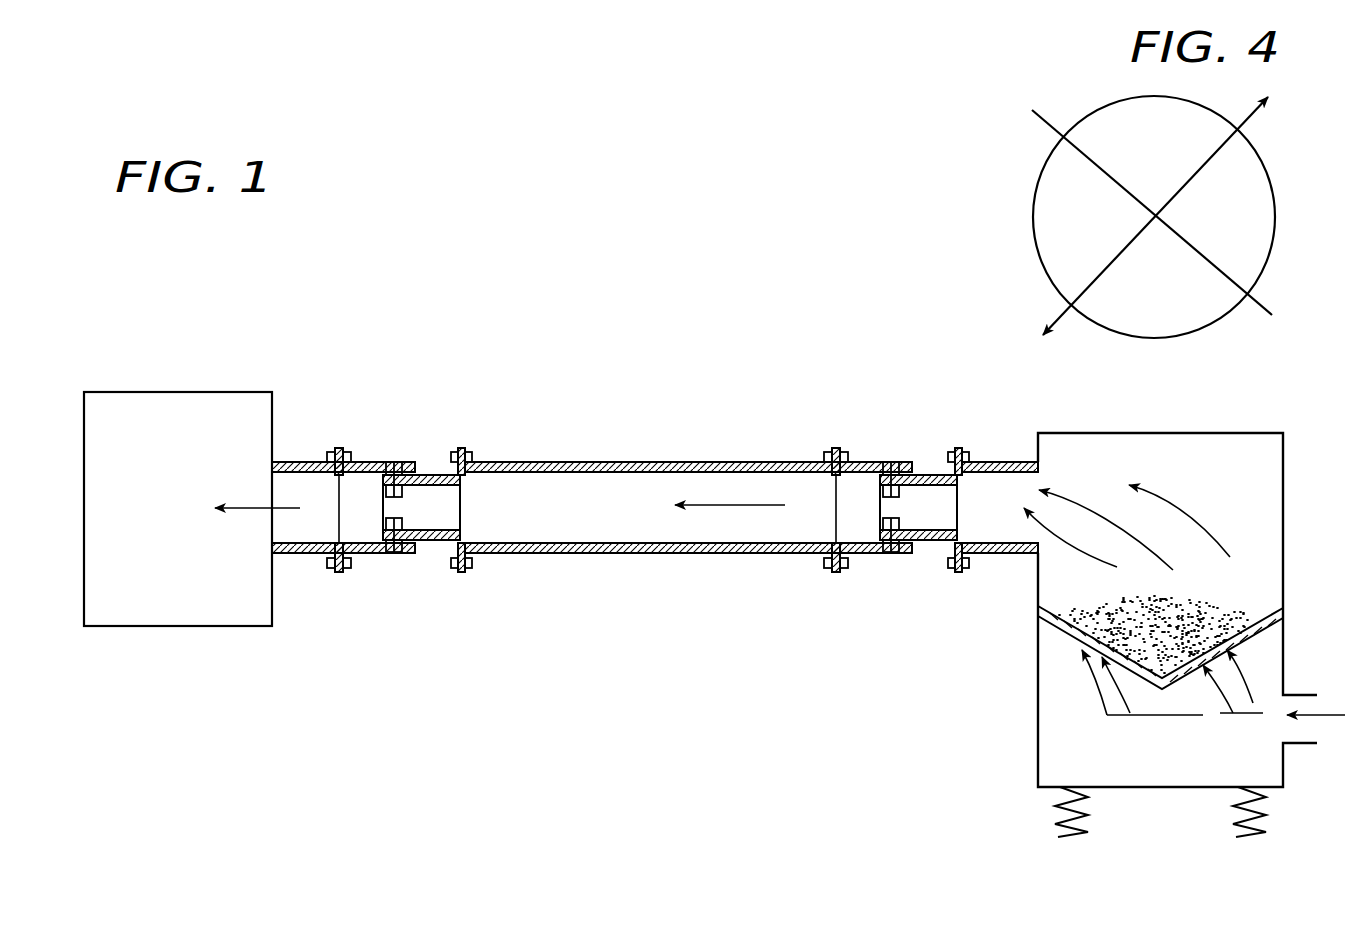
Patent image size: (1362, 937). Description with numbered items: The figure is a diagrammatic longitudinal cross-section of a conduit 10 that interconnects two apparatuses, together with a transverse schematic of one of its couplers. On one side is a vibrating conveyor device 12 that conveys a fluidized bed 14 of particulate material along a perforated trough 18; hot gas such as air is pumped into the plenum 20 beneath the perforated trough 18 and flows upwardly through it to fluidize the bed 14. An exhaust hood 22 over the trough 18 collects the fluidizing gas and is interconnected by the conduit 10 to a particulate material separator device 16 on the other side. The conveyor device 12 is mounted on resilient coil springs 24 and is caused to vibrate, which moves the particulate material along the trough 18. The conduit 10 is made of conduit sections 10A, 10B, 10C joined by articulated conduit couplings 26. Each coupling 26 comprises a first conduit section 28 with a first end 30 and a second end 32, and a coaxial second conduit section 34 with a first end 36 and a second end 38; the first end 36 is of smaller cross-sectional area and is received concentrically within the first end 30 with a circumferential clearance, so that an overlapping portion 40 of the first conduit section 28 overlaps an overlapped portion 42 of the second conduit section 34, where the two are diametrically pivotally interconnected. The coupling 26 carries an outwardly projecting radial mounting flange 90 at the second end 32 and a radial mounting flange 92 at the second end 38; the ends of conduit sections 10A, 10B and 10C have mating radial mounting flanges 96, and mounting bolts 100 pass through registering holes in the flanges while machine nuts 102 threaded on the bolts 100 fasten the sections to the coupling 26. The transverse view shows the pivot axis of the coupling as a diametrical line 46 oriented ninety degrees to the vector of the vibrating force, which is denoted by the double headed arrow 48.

In FIG. 1, the conduit 10 is at (716, 217).
In FIG. 1, the conduit section 10A is at (287, 462).
In FIG. 1, the conduit section 10B is at (612, 462).
In FIG. 1, the conduit section 10C is at (1010, 460).
In FIG. 1, the vibrating conveyor device 12 is at (1284, 463).
In FIG. 1, the fluidized bed of particulate material 14 is at (1216, 611).
In FIG. 1, the particulate material separator device 16 is at (82, 578).
In FIG. 1, the perforated trough 18 is at (1243, 626).
In FIG. 1, the plenum 20 is at (1208, 761).
In FIG. 1, the exhaust hood 22 is at (1236, 433).
In FIG. 1, the coil springs 24 is at (1266, 812).
In FIG. 1, the articulated conduit coupling 26 is at (429, 323).
In FIG. 1, the first conduit section 28 is at (365, 462).
In FIG. 1, the first end 30 is at (425, 462).
In FIG. 1, the second end 32 is at (350, 462).
In FIG. 1, the second conduit section 34 is at (428, 541).
In FIG. 1, the first end 36 is at (360, 553).
In FIG. 1, the second end 38 is at (497, 551).
In FIG. 1, the overlapping portion 40 is at (418, 462).
In FIG. 1, the overlapped portion 42 is at (380, 462).
In FIG. 4, the diametrical line 46 is at (1220, 268).
In FIG. 4, the double headed arrow 48 is at (1205, 165).
In FIG. 1, the radial mounting flange 90 is at (337, 572).
In FIG. 1, the radial mounting flange 92 is at (455, 572).
In FIG. 1, the radial mounting flanges 96 is at (335, 572).
In FIG. 1, the mounting bolts 100 is at (945, 455).
In FIG. 1, the machine nuts 102 is at (1005, 460).